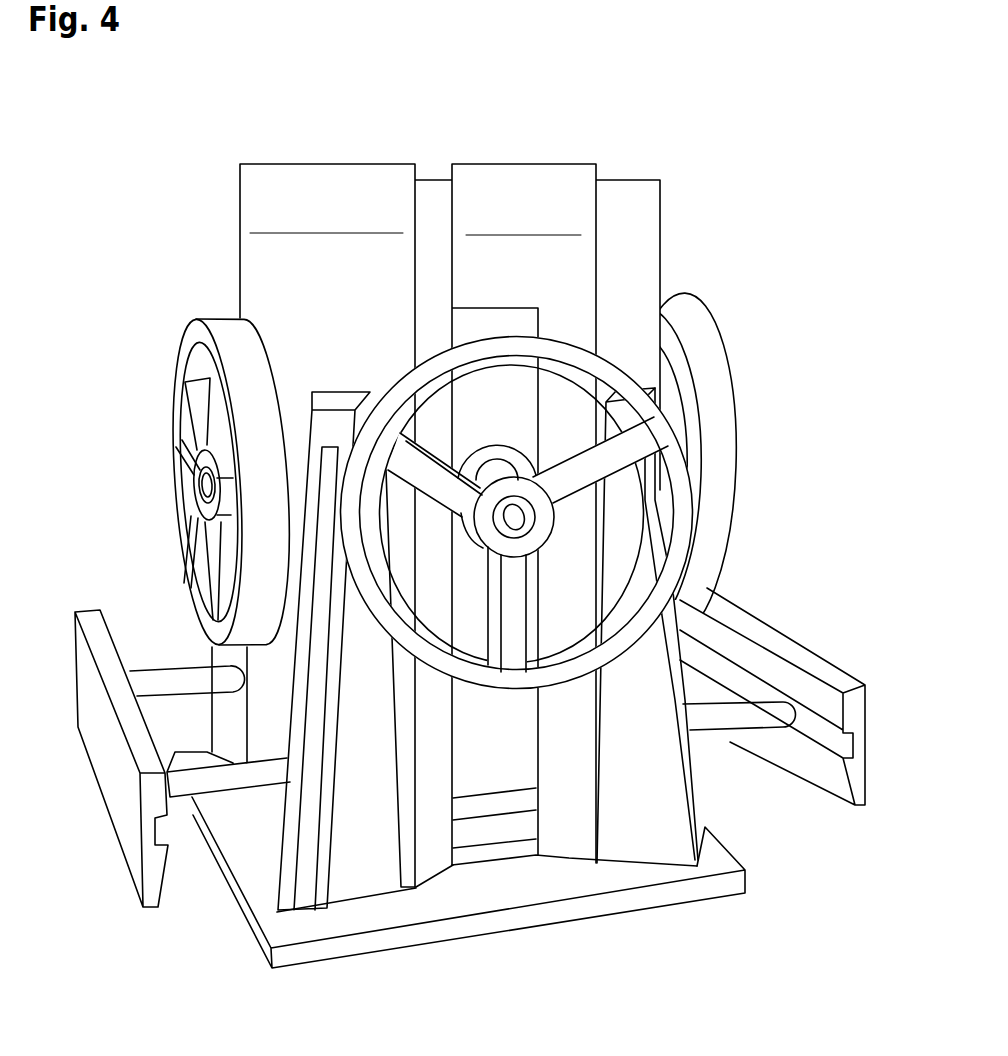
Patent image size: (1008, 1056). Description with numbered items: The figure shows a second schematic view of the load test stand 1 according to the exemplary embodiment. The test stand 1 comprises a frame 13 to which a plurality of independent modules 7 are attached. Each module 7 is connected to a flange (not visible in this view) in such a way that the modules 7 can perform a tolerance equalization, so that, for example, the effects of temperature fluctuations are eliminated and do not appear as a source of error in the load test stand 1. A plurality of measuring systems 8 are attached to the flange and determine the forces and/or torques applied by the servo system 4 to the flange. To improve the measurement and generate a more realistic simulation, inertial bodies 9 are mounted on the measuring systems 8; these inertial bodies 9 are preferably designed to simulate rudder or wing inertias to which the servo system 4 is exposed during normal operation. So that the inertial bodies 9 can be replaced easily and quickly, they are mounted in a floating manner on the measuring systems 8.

The load test stand 1 is at (818, 118).
The servo system 4 is at (406, 678).
The independent modules 7 is at (508, 210).
The measuring systems 8 is at (198, 492).
The inertial bodies 9 is at (403, 397).
The frame 13 is at (397, 913).